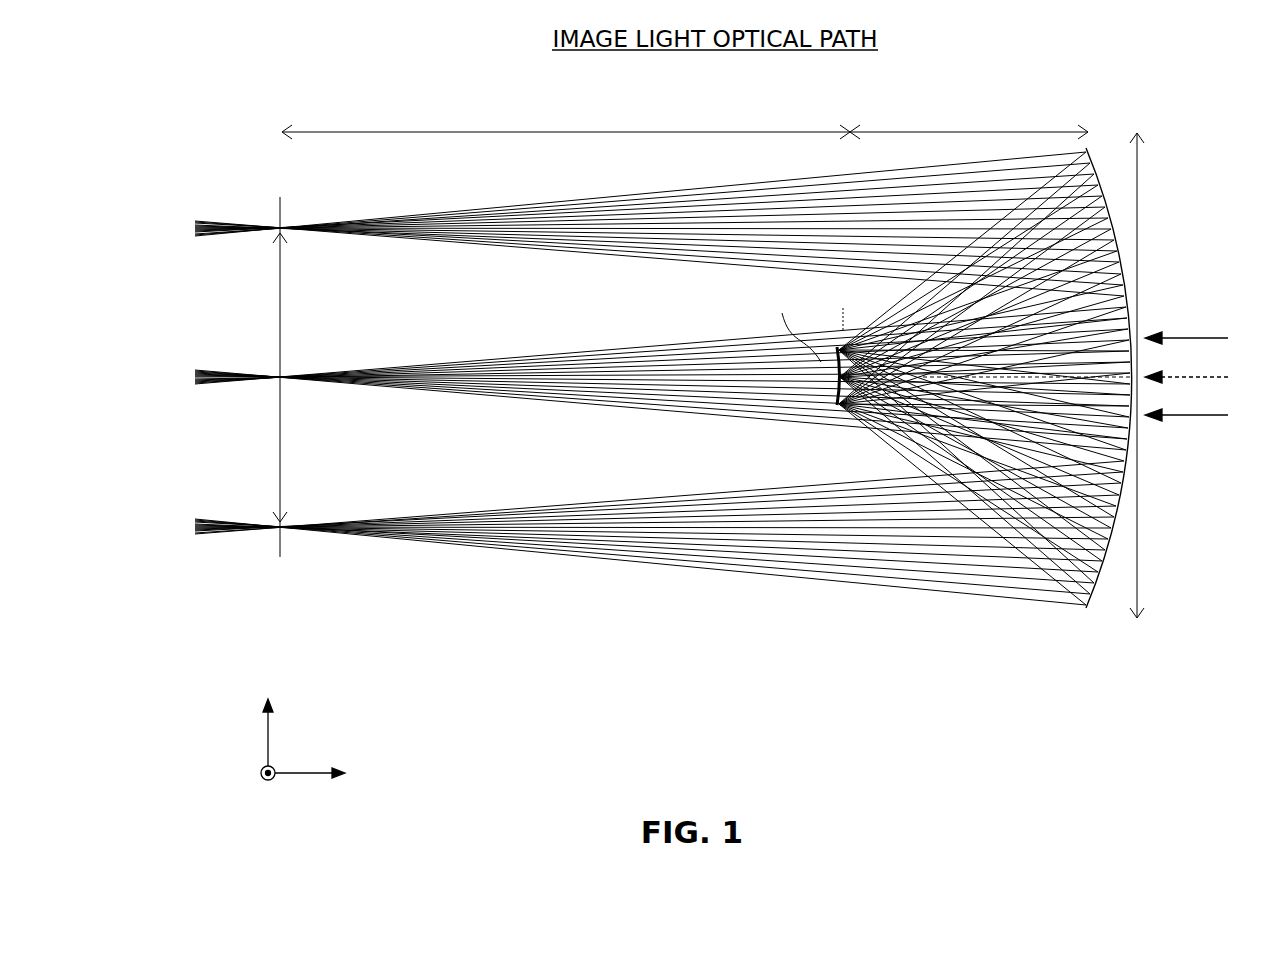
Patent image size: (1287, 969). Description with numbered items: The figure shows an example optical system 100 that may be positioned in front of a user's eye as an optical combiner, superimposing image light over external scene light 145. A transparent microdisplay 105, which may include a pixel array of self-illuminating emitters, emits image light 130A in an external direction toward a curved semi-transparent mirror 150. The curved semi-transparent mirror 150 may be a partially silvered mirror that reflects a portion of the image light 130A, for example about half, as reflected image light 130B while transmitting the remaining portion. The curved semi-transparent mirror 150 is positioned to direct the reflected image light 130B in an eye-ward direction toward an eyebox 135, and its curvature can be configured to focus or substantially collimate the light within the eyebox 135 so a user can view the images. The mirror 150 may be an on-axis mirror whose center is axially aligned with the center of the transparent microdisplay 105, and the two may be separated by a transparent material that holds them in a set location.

The optical system 100 is at (217, 123).
The transparent microdisplay 105 is at (838, 404).
The image light 130A is at (892, 303).
The reflected image light 130B is at (713, 187).
The eyebox 135 is at (278, 412).
The external scene light 145 is at (1186, 411).
The curved semi-transparent mirror 150 is at (1085, 610).